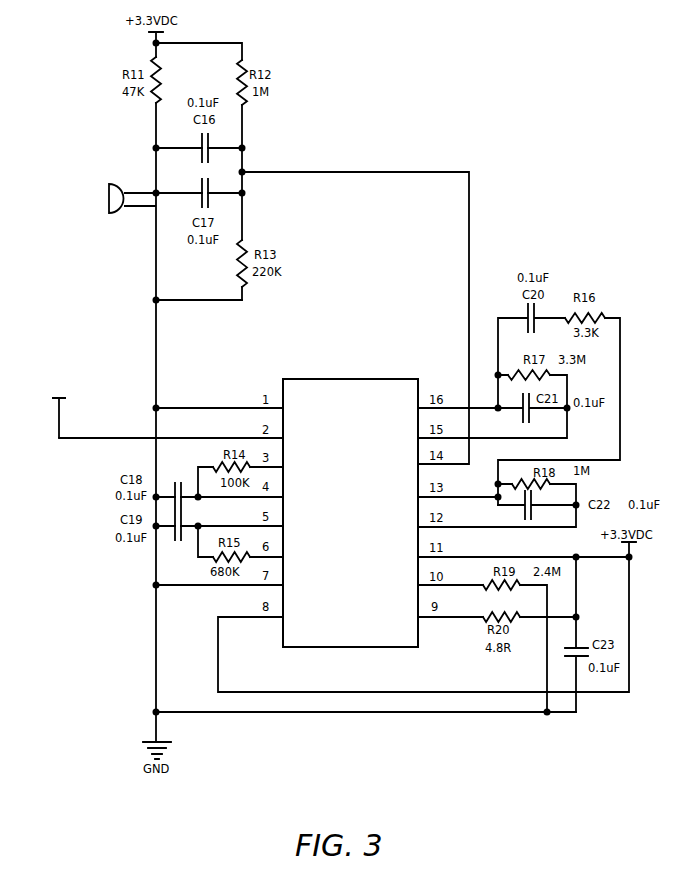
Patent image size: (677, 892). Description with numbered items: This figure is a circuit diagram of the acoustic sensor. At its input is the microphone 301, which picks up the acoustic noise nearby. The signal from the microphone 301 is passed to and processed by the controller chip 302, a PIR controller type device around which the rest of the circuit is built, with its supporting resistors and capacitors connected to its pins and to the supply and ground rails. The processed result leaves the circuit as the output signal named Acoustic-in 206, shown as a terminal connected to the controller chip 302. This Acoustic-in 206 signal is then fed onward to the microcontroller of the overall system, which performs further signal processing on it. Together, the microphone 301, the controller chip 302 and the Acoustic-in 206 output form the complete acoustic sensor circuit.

The microphone Mic1 301 is at (82, 186).
The controller chip U4 302 is at (342, 354).
The Acoustic-in output signal 206 is at (60, 380).